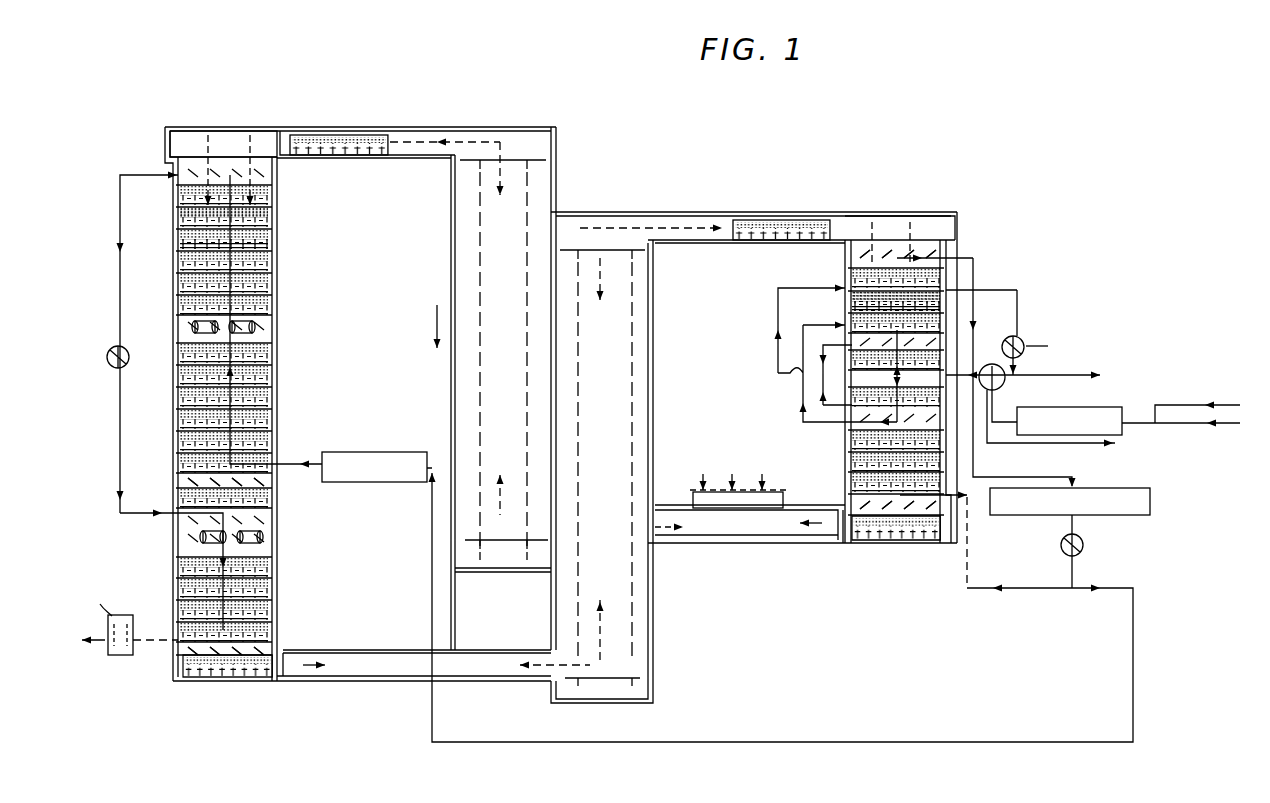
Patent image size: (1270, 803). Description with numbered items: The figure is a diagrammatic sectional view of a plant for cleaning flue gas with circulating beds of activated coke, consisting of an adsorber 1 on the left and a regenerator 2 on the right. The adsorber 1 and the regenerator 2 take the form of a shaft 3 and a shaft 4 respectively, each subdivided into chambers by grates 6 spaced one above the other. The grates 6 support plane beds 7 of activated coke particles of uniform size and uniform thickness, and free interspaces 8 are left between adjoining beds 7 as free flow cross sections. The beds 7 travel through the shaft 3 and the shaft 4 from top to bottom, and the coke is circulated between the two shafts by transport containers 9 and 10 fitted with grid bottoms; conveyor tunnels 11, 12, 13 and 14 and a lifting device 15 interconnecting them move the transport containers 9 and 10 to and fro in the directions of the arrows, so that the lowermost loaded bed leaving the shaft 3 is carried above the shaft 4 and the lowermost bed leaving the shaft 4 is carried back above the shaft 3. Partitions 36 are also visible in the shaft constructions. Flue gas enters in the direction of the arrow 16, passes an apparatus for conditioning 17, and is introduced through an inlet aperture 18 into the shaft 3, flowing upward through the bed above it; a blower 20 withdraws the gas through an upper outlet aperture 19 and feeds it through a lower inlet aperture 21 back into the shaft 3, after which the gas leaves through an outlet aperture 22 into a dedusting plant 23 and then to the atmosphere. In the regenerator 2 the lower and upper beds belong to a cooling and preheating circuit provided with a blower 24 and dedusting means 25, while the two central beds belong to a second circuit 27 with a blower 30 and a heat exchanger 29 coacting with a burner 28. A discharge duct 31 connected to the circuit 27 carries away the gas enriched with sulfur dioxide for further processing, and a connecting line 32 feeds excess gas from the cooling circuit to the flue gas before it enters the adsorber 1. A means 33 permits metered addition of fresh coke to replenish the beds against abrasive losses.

The adsorber 1 is at (284, 368).
The regenerator 2 is at (845, 461).
The shaft 3 is at (275, 196).
The shaft 4 is at (850, 314).
The grates 6 is at (266, 498).
The beds 7 is at (270, 214).
The free interspaces 8 is at (262, 253).
The transport container 9 is at (205, 666).
The transport container 10 is at (343, 140).
The conveyor tunnel 11 is at (486, 662).
The conveyor tunnel 12 is at (455, 145).
The conveyor tunnel 13 is at (723, 224).
The conveyor tunnel 14 is at (470, 546).
The lifting device 15 is at (622, 616).
The arrow 16 is at (435, 323).
The apparatus for conditioning 17 is at (360, 484).
The inlet aperture 18 is at (283, 464).
The upper outlet aperture 19 is at (176, 171).
The blower 20 is at (107, 362).
The inlet aperture 21 is at (173, 508).
The outlet aperture 22 is at (172, 644).
The dedusting plant 23 is at (120, 652).
The blower 24 is at (1083, 545).
The dedusting means 25 is at (1150, 494).
The second circuit 27 is at (777, 352).
The burner 28 is at (1122, 433).
The heat exchanger 29 is at (1005, 372).
The blower 30 is at (1042, 330).
The discharge duct 31 is at (1076, 376).
The connecting line 32 is at (1134, 642).
The means for replenishing the beds 33 is at (725, 489).
The partitions 36 is at (266, 644).